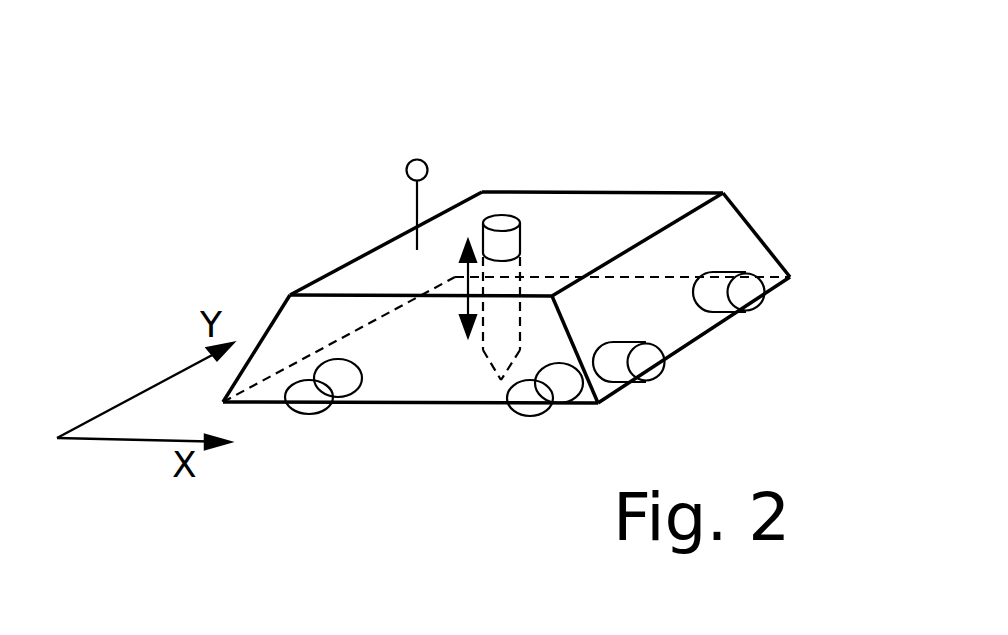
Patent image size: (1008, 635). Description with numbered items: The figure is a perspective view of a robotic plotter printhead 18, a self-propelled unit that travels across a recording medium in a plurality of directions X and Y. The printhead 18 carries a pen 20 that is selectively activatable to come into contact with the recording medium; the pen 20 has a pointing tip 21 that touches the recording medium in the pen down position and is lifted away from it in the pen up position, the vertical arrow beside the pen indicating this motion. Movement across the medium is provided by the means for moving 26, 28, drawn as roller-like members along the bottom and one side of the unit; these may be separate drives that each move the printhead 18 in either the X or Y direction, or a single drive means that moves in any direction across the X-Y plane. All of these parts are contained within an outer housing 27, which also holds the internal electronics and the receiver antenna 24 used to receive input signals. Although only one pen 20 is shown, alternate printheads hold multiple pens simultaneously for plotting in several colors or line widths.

The robotic plotter printhead 18 is at (670, 158).
The pen 20 is at (522, 237).
The pointing tip 21 is at (500, 381).
The receiver antenna 24 is at (413, 213).
The means for moving 26 is at (313, 413).
The outer housing 27 is at (770, 250).
The means for moving 28 is at (750, 313).